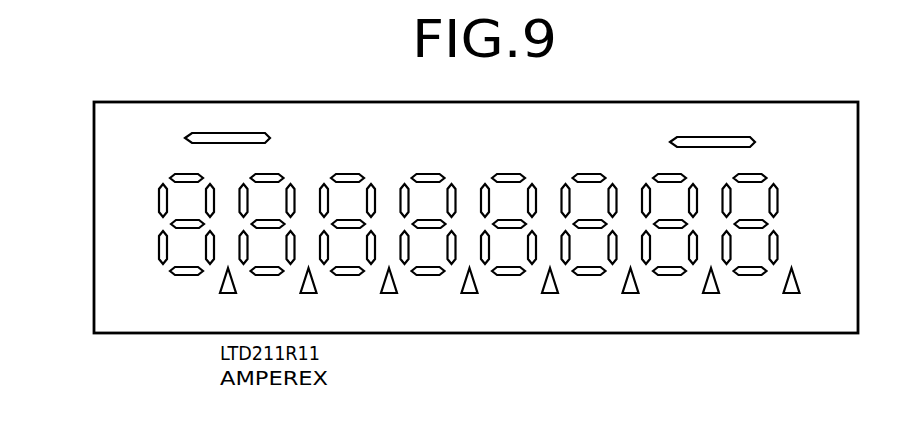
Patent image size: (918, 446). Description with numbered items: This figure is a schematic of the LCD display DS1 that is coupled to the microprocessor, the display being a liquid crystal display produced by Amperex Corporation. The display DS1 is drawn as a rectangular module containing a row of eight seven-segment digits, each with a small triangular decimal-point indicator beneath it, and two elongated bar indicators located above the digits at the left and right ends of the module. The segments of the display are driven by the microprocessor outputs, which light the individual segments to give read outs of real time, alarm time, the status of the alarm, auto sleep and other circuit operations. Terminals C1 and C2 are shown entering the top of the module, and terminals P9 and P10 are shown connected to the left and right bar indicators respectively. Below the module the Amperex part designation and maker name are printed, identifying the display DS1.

The eight-digit seven-segment display module DS1 is at (476, 202).
The display module connector/pin C1 is at (278, 102).
The display module connector/pin C2 is at (515, 102).
The display pin P9 / upper-left bar indicator P9 is at (185, 138).
The display pin P10 / upper-right bar indicator P10 is at (755, 142).